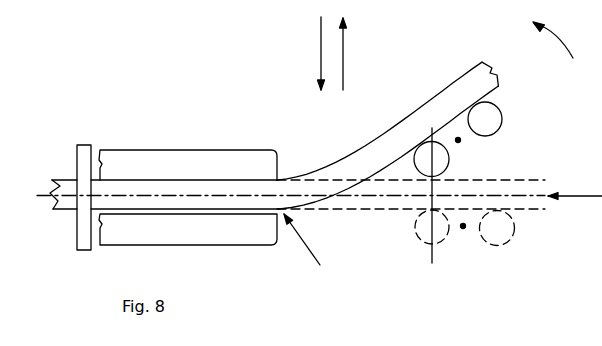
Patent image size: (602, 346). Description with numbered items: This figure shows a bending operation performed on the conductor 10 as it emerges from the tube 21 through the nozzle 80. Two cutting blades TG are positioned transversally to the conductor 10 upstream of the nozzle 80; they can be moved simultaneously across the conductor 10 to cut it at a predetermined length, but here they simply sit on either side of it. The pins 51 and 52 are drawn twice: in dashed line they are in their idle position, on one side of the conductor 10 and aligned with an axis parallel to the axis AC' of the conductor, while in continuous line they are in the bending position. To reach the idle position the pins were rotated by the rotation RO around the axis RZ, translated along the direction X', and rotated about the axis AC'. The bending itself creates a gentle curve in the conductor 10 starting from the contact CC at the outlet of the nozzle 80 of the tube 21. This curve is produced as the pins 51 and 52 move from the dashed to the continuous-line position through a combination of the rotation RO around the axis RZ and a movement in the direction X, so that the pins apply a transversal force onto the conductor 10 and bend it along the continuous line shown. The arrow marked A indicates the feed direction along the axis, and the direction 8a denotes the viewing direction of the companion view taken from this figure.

The conductor 10 is at (60, 178).
The tube 21 is at (143, 162).
The pin 51 is at (440, 162).
The pin 52 is at (490, 118).
The nozzle 80 is at (303, 248).
The direction 8a is at (590, 198).
The cutting blade TG is at (82, 230).
The contact CC is at (277, 172).
The axis RZ is at (460, 140).
The axis AC' AC is at (375, 196).
The direction X is at (320, 41).
The direction A is at (597, 169).
The rotation RO is at (563, 38).